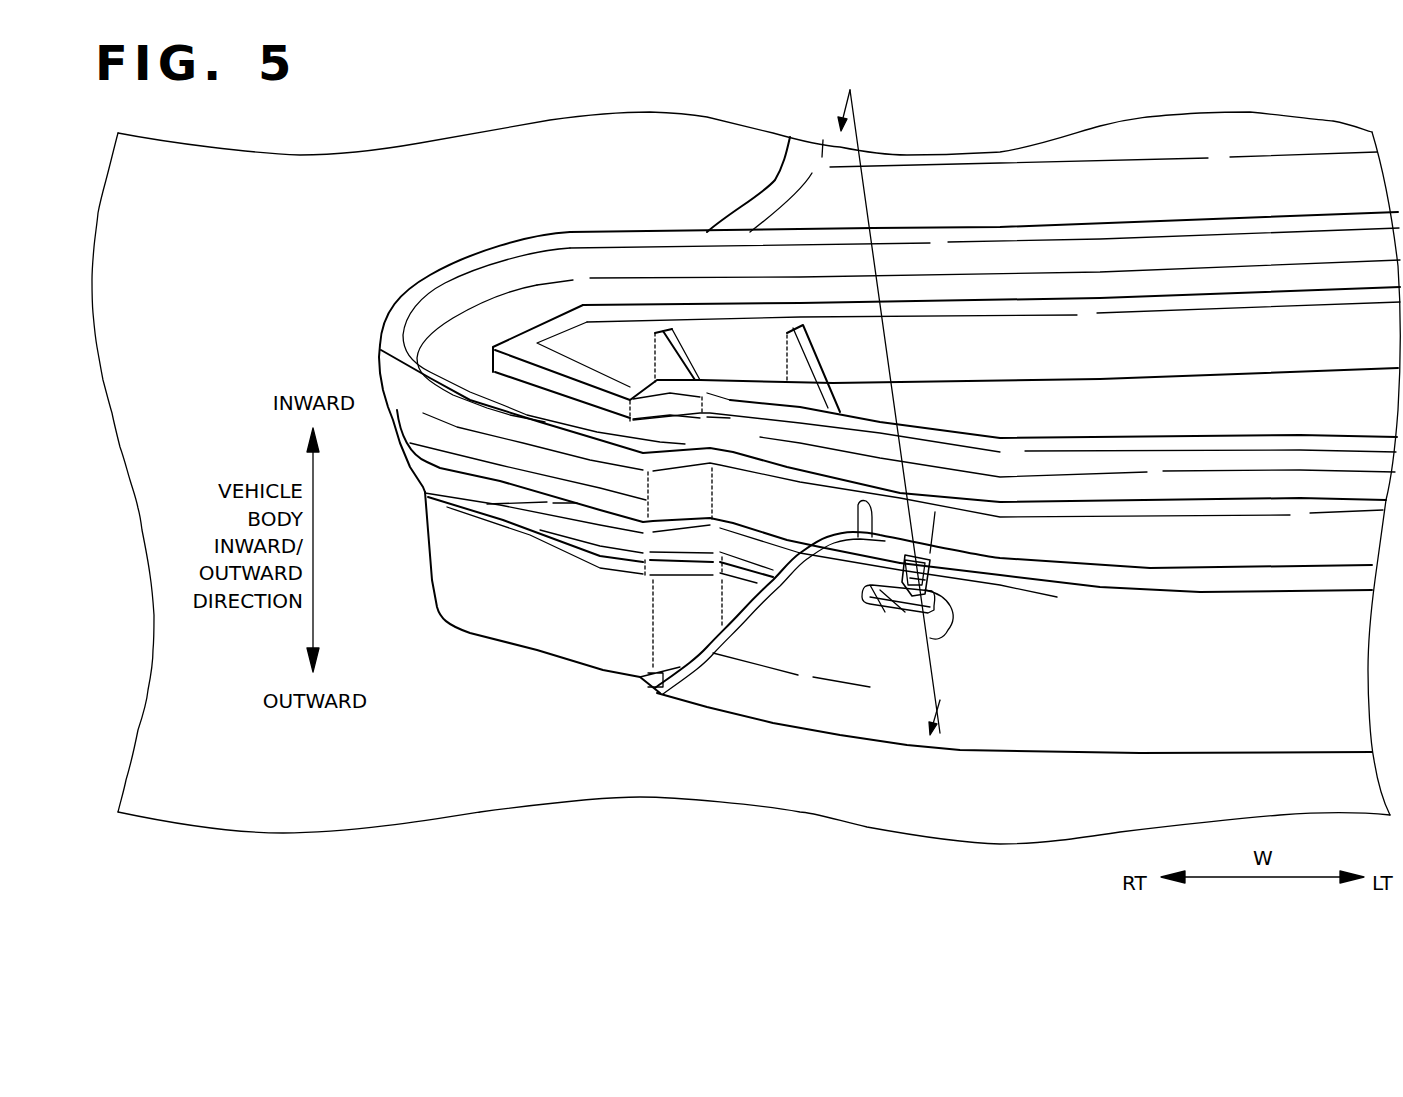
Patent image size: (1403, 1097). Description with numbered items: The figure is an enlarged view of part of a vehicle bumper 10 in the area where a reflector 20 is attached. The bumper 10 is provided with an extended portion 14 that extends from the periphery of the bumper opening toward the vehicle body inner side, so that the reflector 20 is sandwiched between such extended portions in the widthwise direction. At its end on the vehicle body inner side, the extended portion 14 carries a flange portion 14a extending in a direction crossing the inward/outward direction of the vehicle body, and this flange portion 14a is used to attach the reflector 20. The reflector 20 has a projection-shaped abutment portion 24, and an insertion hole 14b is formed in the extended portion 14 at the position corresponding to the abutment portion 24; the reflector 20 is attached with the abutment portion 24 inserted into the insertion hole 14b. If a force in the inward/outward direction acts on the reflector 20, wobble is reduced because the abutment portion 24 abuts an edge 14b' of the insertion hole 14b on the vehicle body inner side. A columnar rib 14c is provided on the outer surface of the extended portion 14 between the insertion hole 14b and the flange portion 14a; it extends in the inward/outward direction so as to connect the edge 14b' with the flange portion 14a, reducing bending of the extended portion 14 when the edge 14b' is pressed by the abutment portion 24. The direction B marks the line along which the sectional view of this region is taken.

The bumper 10 is at (628, 133).
The extended portion 14 is at (1063, 187).
The flange portion 14a is at (1200, 127).
The insertion hole 14b is at (879, 624).
The edge of the insertion hole 14b' is at (857, 559).
The rib 14c is at (935, 582).
The reflector 20 is at (498, 247).
The abutment portion 24 is at (903, 610).
The direction B is at (897, 399).